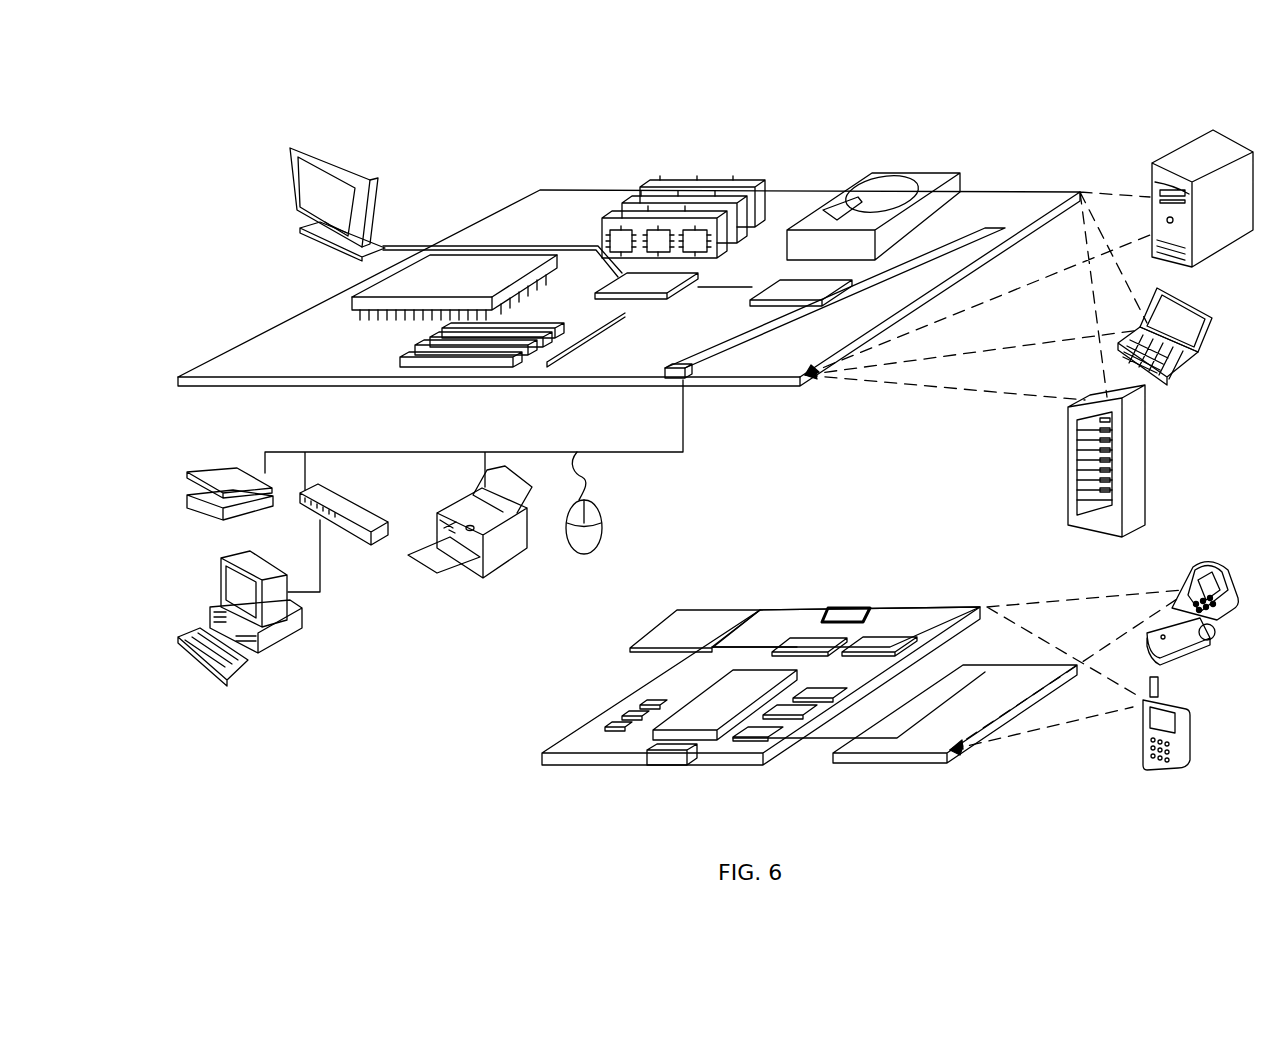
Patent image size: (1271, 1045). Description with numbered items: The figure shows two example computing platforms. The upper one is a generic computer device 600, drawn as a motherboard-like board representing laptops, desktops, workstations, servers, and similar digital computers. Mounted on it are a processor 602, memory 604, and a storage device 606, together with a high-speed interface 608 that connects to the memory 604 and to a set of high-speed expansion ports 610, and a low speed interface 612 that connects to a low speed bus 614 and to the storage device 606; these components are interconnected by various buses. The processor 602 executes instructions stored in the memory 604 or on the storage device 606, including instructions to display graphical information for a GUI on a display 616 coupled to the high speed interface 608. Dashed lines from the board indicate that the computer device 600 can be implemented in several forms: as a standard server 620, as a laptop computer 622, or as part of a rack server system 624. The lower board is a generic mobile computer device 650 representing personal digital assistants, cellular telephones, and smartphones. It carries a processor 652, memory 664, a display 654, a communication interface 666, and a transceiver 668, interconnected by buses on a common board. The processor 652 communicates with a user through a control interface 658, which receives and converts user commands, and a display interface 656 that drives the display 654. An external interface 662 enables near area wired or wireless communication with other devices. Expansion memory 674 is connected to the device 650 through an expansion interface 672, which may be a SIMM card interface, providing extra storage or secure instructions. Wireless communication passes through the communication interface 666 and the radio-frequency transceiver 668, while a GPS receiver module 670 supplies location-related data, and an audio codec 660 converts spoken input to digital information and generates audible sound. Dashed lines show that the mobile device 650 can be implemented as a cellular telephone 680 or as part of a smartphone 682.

The generic computer device 600 is at (472, 166).
The processor 602 is at (358, 300).
The memory 604 is at (648, 185).
The storage device 606 is at (862, 173).
The high-speed interface 608 is at (627, 285).
The high-speed expansion ports 610 is at (420, 357).
The low speed interface 612 is at (778, 285).
The low speed bus 614 is at (703, 380).
The display 616 is at (293, 147).
The standard server 620 is at (1150, 180).
The laptop computer 622 is at (1217, 314).
The rack server system 624 is at (1068, 488).
The generic mobile computer device 650 is at (512, 769).
The processor 652 is at (700, 728).
The display 654 is at (915, 742).
The display interface 656 is at (762, 742).
The control interface 658 is at (793, 715).
The audio codec 660 is at (817, 694).
The external interface 662 is at (668, 753).
The memory 664 is at (640, 710).
The communication interface 666 is at (807, 638).
The transceiver 668 is at (880, 638).
The GPS receiver module 670 is at (857, 608).
The expansion interface 672 is at (847, 610).
The expansion memory 674 is at (692, 620).
The cellular telephone 680 is at (1185, 578).
The smartphone 682 is at (1145, 735).